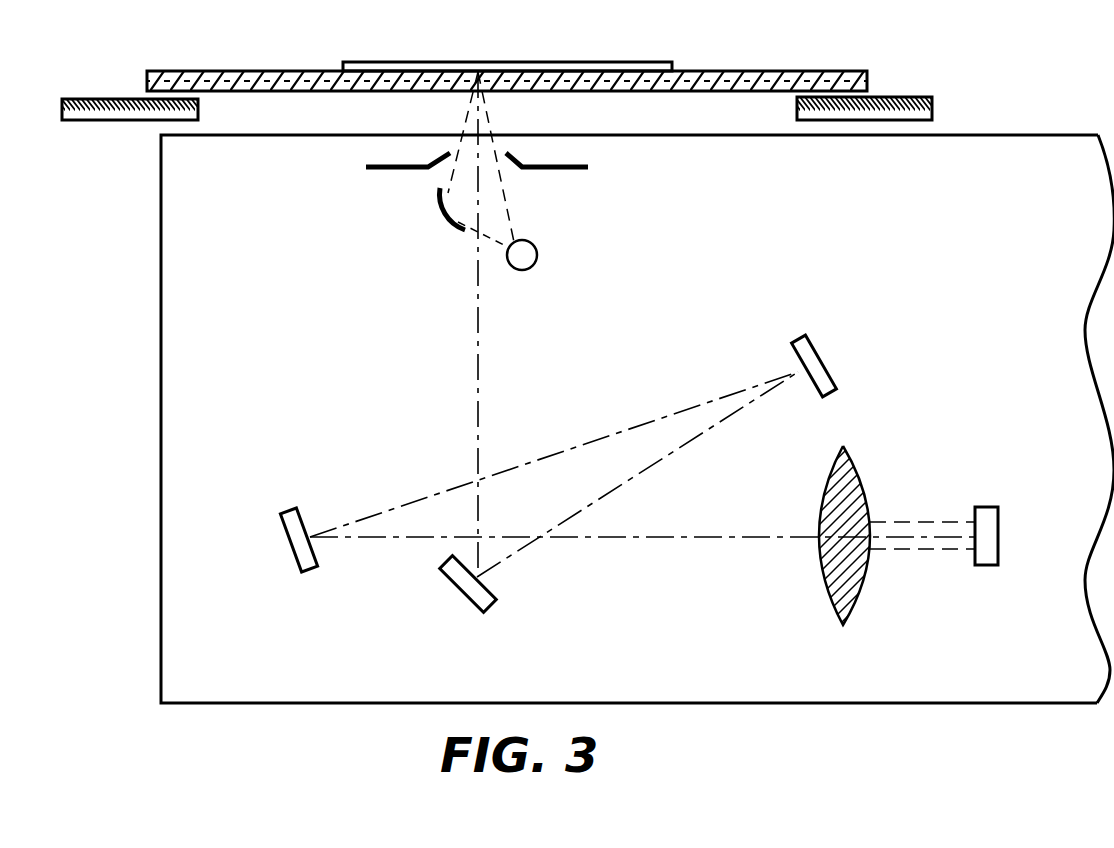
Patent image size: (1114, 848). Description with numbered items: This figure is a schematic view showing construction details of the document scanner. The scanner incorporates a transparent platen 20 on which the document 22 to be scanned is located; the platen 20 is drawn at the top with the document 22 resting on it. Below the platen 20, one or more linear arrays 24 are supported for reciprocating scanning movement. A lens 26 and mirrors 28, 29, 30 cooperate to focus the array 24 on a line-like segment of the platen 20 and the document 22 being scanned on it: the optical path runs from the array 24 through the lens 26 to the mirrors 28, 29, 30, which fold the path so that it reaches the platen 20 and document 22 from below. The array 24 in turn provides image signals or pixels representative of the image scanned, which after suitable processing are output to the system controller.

The slide / specimen support plate 20 is at (265, 92).
The specimen 22 is at (562, 62).
The laser light source 24 is at (987, 507).
The lens 26 is at (858, 598).
The mirror 28 is at (470, 604).
The mirror 29 is at (822, 358).
The mirror 30 is at (290, 550).